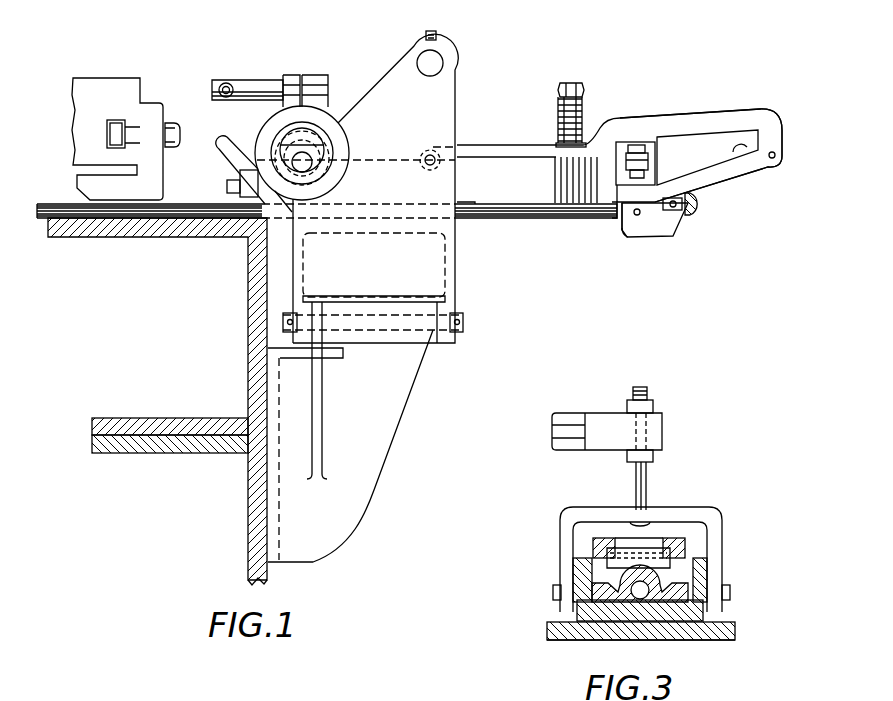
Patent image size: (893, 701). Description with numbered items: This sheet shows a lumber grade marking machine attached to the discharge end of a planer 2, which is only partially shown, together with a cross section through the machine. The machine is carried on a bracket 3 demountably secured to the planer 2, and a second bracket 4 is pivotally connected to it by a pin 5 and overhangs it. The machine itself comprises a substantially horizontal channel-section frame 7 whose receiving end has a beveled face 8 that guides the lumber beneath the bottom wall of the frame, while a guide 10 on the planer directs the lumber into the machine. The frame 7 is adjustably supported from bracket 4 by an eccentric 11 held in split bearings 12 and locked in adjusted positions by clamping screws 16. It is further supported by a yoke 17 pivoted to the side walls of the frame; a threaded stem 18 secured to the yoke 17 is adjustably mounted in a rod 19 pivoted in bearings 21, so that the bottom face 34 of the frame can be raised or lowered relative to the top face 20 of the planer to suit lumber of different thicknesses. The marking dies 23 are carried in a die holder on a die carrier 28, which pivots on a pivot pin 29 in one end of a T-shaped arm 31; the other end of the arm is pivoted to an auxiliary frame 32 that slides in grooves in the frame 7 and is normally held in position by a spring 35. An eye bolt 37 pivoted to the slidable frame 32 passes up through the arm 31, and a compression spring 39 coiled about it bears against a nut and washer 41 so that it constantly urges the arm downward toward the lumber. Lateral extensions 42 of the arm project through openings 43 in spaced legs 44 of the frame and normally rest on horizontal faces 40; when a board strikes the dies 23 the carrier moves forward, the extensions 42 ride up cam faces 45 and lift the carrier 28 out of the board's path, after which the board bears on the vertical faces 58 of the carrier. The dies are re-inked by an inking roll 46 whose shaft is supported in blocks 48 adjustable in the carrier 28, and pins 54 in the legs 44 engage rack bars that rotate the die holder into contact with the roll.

In FIG. 1, the planer 2 is at (250, 334).
In FIG. 1, the bracket 3 is at (367, 480).
In FIG. 1, the bracket 4 is at (448, 266).
In FIG. 1, the pin 5 is at (461, 318).
In FIG. 1, the frame 7 is at (527, 192).
In FIG. 3, the frame 7 is at (588, 622).
In FIG. 1, the beveled face 8 is at (222, 221).
In FIG. 1, the guide 10 is at (98, 191).
In FIG. 1, the eccentric 11 is at (320, 123).
In FIG. 1, the split bearings 12 is at (263, 127).
In FIG. 1, the clamping screws 16 is at (243, 87).
In FIG. 3, the yoke 17 is at (710, 513).
In FIG. 1, the threaded stem 18 is at (434, 30).
In FIG. 3, the threaded stem 18 is at (643, 478).
In FIG. 1, the rod 19 is at (424, 56).
In FIG. 3, the rod 19 is at (567, 420).
In FIG. 1, the top face 20 is at (173, 218).
In FIG. 1, the bearings 21 is at (447, 48).
In FIG. 1, the dies 23 is at (632, 180).
In FIG. 1, the die carrier 28 is at (667, 232).
In FIG. 1, the pivot pin 29 is at (634, 141).
In FIG. 1, the T-shaped arm 31 is at (492, 152).
In FIG. 3, the T-shaped arm 31 is at (602, 543).
In FIG. 3, the auxiliary frame 32 is at (677, 600).
In FIG. 3, the bottom face 34 is at (698, 642).
In FIG. 3, the spring 35 is at (636, 596).
In FIG. 1, the eye bolt 37 is at (570, 83).
In FIG. 1, the compression spring 39 is at (582, 107).
In FIG. 1, the horizontal faces 40 is at (650, 145).
In FIG. 1, the nut and washer 41 is at (565, 85).
In FIG. 1, the lateral extensions 42 is at (622, 201).
In FIG. 1, the openings 43 is at (700, 137).
In FIG. 1, the legs 44 is at (753, 112).
In FIG. 1, the cam face 45 is at (743, 149).
In FIG. 1, the inking roll 46 is at (700, 205).
In FIG. 1, the blocks 48 is at (685, 216).
In FIG. 1, the pin 54 is at (777, 154).
In FIG. 1, the vertical faces 58 is at (627, 234).